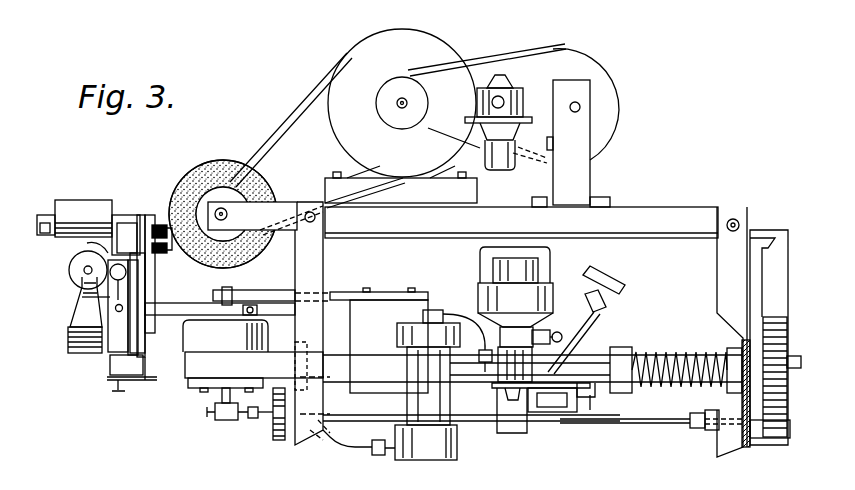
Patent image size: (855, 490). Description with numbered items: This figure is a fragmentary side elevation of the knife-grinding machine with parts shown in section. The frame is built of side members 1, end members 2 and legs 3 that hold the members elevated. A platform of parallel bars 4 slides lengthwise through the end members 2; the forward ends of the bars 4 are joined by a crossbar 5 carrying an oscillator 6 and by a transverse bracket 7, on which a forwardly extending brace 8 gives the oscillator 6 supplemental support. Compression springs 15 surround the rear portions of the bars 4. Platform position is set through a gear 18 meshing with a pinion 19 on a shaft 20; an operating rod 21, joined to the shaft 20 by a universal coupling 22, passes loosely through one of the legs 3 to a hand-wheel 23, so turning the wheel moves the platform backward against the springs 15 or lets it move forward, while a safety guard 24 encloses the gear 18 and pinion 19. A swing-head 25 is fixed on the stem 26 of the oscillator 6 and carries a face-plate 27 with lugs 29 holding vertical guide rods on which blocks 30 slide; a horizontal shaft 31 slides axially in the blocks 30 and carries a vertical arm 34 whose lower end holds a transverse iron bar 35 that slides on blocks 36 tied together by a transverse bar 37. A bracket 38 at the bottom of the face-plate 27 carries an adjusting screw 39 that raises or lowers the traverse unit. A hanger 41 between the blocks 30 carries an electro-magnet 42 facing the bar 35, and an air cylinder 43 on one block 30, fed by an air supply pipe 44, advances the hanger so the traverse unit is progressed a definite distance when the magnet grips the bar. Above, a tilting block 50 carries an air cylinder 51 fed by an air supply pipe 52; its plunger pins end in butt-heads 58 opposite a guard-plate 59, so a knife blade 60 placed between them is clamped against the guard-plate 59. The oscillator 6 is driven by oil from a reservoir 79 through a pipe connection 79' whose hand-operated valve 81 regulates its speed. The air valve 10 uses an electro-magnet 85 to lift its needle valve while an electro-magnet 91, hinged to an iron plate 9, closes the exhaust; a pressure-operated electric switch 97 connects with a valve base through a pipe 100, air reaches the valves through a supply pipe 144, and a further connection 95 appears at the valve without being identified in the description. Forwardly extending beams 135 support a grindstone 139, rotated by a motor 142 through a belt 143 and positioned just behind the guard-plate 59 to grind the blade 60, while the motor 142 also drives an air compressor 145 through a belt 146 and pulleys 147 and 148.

The side members 1 is at (410, 212).
The end members 2 is at (733, 343).
The legs 3 is at (521, 329).
The parallel bars 4 is at (333, 378).
The crossbar 5 is at (190, 388).
The oscillator 6 is at (265, 327).
The bracket 7 is at (389, 346).
The brace 8 is at (335, 296).
The iron plate 9 is at (593, 390).
The air valve 10 is at (480, 288).
The supply pipe 144 is at (574, 342).
The compression springs 15 is at (668, 352).
The gear 18 is at (776, 375).
The pinion 19 is at (765, 437).
The shaft 20 is at (716, 418).
The operating rod 21 is at (627, 426).
The universal coupling 22 is at (692, 418).
The hand-wheel 23 is at (273, 438).
The safety guard 24 is at (769, 337).
The swing-head 25 is at (173, 317).
The stem 26 is at (232, 290).
The face-plate 27 is at (145, 270).
The lugs 29 is at (125, 320).
The block 30 is at (85, 247).
The horizontal shaft 31 is at (118, 284).
The vertical arm 34 is at (108, 357).
The iron bar 35 is at (107, 355).
The blocks 36 is at (147, 348).
The transverse bar 37 is at (126, 365).
The bracket 38 is at (147, 380).
The adjusting screw 39 is at (110, 380).
The hanger 41 is at (86, 303).
The electro-magnet 42 is at (70, 343).
The air cylinder 43 is at (70, 275).
The air supply pipe 44 is at (83, 280).
The tilting block 50 is at (125, 215).
The air cylinder 51 is at (83, 210).
The air supply pipe 52 is at (43, 235).
The butt-head 58 is at (150, 213).
The guard-plate 59 is at (162, 213).
The knife blade 60 is at (157, 213).
The reservoir 79 is at (417, 385).
The pipe connection 79' is at (352, 444).
The hand-operated valve 81 is at (222, 420).
The electro-magnet 85 is at (493, 263).
The electro-magnet 91 is at (553, 422).
The pipe 95 is at (462, 313).
The air pressure operated electric switch 97 is at (622, 292).
The pipe 100 is at (598, 310).
The beams 135 is at (292, 198).
The grindstone 139 is at (221, 160).
The motor 142 is at (401, 116).
The belt 143 is at (292, 100).
The air compressor 145 is at (523, 92).
The belt 146 is at (493, 60).
The pulley 147 is at (383, 108).
The pulley 148 is at (578, 128).